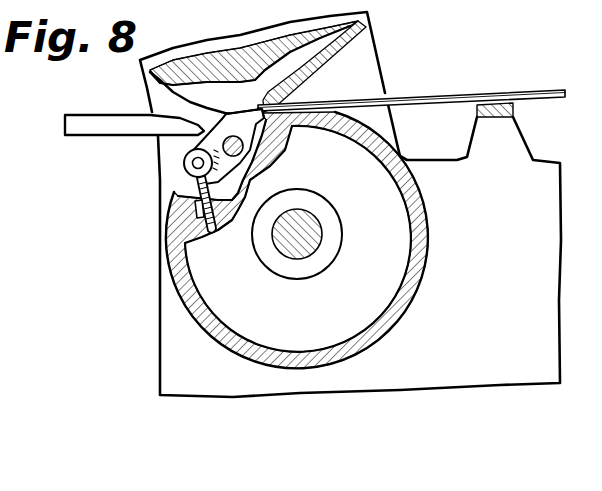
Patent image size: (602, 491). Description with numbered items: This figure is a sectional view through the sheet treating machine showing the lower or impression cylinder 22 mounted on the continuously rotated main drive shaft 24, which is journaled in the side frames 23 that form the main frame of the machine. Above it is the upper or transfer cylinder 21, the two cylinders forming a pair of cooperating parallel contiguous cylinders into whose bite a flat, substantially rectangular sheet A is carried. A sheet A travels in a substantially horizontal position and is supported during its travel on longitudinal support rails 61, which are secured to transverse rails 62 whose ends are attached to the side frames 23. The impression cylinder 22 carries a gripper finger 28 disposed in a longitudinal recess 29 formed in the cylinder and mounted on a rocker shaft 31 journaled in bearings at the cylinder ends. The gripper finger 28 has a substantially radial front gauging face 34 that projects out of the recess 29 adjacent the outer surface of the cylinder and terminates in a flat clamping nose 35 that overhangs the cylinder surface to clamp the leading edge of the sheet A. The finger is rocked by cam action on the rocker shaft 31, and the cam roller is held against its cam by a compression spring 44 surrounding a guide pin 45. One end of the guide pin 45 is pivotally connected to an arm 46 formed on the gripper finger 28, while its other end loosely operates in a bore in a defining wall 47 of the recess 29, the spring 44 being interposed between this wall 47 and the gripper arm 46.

The transfer cylinder 21 is at (363, 29).
The impression cylinder 22 is at (429, 265).
The side frame 23 is at (522, 360).
The shaft 24 is at (307, 232).
The gripper finger 28 is at (248, 104).
The longitudinal recess 29 is at (252, 178).
The rocker shaft 31 is at (243, 149).
The front gauging face 34 is at (258, 120).
The flat clamping nose 35 is at (266, 106).
The compression spring 44 is at (192, 185).
The guide pin 45 is at (208, 222).
The arm 46 is at (208, 155).
The defining wall 47 is at (230, 222).
The support rail 61 is at (536, 99).
The transverse rail 62 is at (501, 117).
The sheet A is at (452, 98).